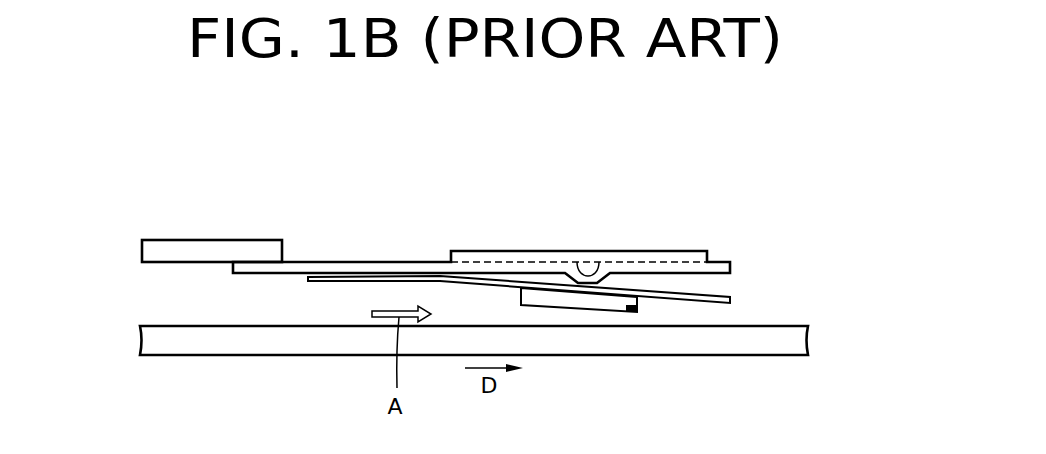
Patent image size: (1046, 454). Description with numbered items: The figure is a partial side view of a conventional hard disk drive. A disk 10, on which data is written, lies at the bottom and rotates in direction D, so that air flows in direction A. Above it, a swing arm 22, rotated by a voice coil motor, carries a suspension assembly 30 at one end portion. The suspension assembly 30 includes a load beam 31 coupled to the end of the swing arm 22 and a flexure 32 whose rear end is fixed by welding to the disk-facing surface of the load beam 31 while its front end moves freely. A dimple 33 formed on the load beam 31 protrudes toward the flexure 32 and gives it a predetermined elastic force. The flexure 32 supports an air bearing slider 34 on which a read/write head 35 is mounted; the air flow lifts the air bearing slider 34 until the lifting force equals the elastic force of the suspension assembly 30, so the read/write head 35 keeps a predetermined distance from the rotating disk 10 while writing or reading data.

The disk 10 is at (292, 343).
The swing arm 22 is at (210, 252).
The suspension assembly 30 is at (481, 285).
The load beam 31 is at (633, 267).
The flexure 32 is at (675, 292).
The dimple 33 is at (588, 268).
The air bearing slider 34 is at (580, 300).
The read/write head 35 is at (630, 313).